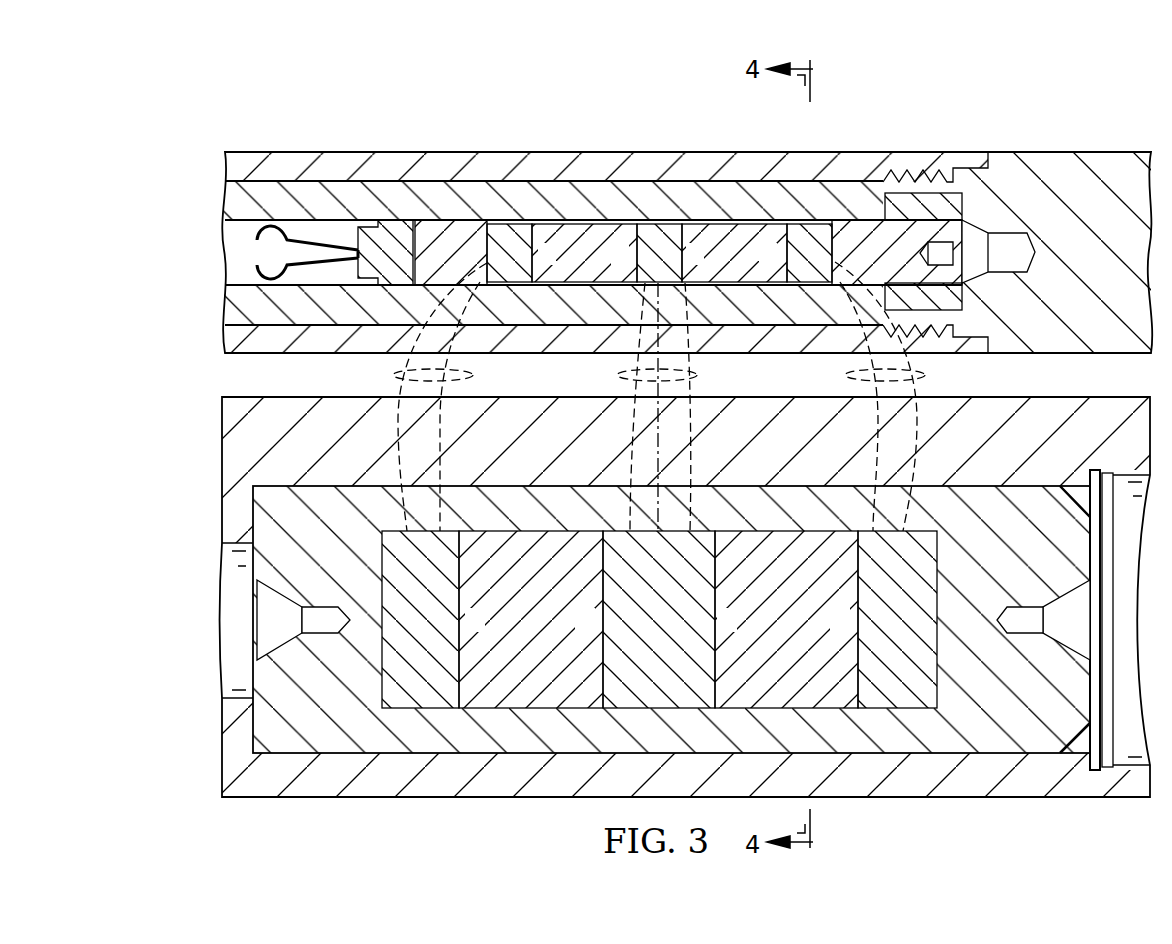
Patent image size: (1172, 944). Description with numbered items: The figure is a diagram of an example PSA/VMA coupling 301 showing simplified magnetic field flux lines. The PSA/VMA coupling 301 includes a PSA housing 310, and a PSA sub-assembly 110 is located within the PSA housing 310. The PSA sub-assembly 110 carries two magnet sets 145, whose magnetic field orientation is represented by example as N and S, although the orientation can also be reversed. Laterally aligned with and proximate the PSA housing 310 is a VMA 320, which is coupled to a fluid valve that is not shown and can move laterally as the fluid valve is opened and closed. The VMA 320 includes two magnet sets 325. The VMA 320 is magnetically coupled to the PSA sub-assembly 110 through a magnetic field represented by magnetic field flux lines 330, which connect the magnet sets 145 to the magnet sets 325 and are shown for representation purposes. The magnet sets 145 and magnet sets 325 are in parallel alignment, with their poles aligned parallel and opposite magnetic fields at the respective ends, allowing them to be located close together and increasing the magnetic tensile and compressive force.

The PSA/VMA coupling 301 is at (229, 104).
The PSA sub-assembly 110 is at (443, 228).
The magnet sets 145 is at (595, 242).
The PSA housing 310 is at (227, 338).
The VMA 320 is at (225, 467).
The magnet sets 325 is at (545, 690).
The magnetic field flux lines 330 is at (393, 375).